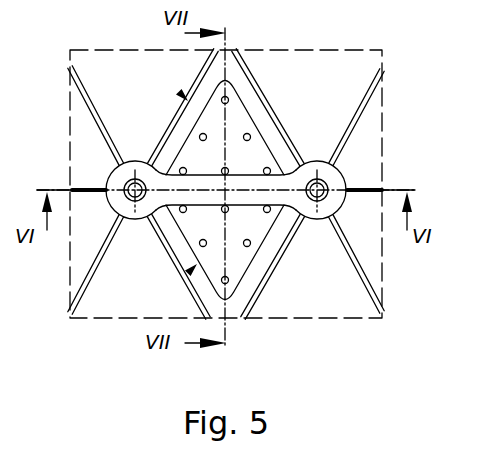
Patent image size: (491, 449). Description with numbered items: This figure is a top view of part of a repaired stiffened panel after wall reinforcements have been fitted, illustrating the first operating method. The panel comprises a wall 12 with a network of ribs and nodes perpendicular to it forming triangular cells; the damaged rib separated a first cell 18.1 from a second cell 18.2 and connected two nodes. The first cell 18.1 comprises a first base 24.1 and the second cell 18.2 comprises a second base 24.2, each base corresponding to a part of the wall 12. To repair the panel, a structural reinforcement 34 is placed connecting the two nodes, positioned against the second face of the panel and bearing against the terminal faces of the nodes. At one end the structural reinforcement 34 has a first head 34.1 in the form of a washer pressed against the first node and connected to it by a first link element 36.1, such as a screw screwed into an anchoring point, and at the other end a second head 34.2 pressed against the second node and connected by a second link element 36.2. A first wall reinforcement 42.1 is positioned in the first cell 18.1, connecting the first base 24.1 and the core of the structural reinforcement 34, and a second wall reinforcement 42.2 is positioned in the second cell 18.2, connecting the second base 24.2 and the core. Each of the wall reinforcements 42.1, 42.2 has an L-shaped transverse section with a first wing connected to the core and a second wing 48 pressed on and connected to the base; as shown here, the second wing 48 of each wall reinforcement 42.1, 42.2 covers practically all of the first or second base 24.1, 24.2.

The wall 12 is at (341, 297).
The first cell 18.1 is at (177, 90).
The second cell 18.2 is at (271, 296).
The first base 24.1 is at (233, 83).
The second base 24.2 is at (274, 249).
The structural reinforcement 34 is at (280, 118).
The first head 34.1 is at (317, 161).
The second head 34.2 is at (133, 161).
The first link element 36.1 is at (342, 172).
The second link element 36.2 is at (134, 222).
The first wall reinforcement 42.1 is at (250, 98).
The second wall reinforcement 42.2 is at (186, 284).
The second wing 48 is at (176, 90).